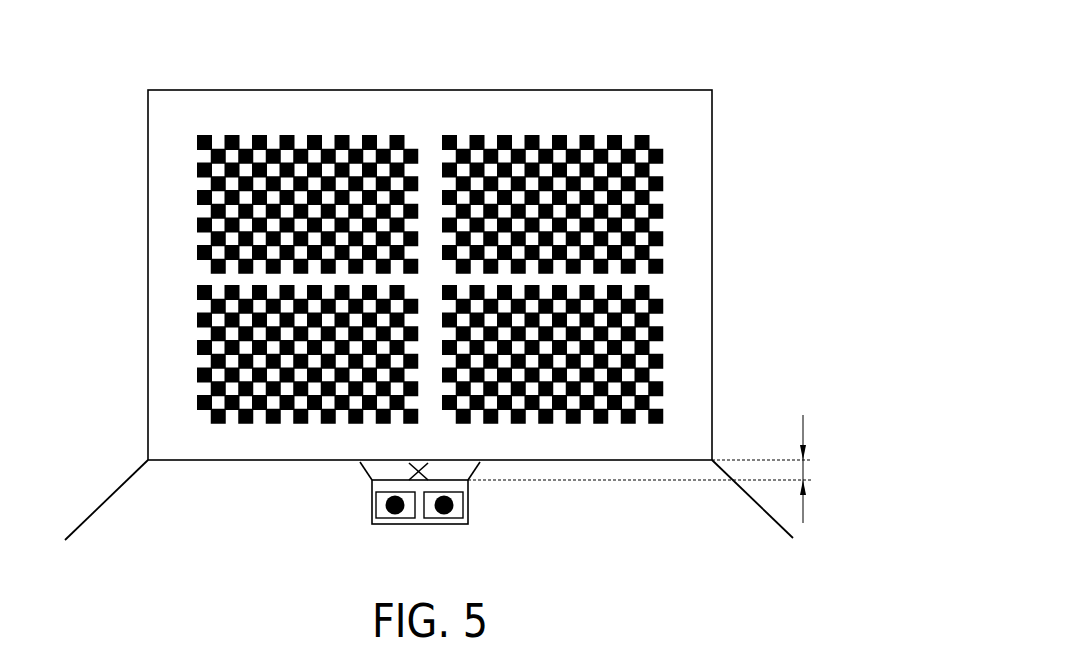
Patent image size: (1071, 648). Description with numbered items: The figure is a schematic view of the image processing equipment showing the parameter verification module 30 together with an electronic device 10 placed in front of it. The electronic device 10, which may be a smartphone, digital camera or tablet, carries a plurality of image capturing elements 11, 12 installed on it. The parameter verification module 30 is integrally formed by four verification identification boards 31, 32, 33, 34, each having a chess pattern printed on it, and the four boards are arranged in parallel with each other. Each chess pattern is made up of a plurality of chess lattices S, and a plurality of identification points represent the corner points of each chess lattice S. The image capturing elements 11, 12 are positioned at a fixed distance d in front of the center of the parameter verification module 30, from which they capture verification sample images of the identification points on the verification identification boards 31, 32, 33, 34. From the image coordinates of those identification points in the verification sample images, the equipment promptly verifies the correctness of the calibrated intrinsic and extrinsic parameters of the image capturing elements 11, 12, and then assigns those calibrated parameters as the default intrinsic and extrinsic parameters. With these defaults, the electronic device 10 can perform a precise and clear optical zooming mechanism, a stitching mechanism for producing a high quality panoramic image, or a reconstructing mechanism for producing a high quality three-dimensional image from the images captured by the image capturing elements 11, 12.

The electronic device 10 is at (476, 526).
The image capturing element 11 is at (395, 518).
The image capturing element 12 is at (441, 518).
The parameter verification module 30 is at (712, 155).
The verification identification board 31 is at (324, 118).
The verification identification board 32 is at (644, 118).
The verification identification board 33 is at (176, 354).
The verification identification board 34 is at (686, 349).
The chess lattice S is at (510, 135).
The fixed distance d is at (650, 469).